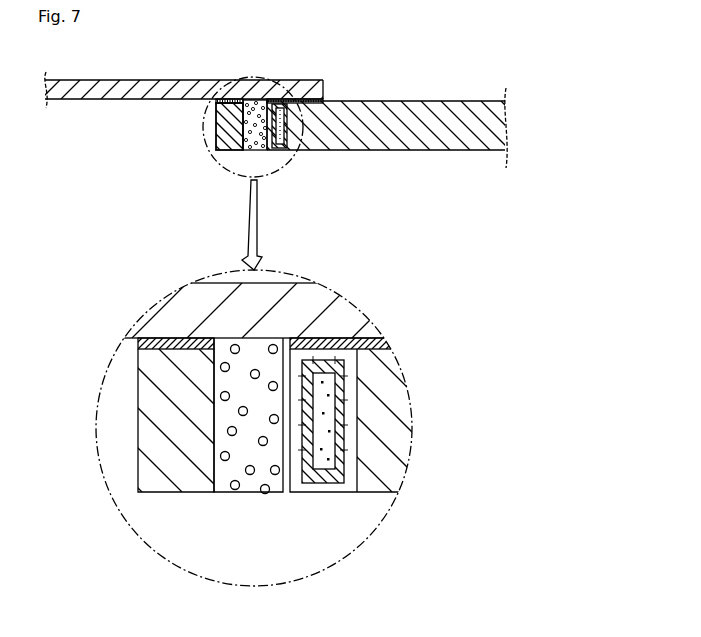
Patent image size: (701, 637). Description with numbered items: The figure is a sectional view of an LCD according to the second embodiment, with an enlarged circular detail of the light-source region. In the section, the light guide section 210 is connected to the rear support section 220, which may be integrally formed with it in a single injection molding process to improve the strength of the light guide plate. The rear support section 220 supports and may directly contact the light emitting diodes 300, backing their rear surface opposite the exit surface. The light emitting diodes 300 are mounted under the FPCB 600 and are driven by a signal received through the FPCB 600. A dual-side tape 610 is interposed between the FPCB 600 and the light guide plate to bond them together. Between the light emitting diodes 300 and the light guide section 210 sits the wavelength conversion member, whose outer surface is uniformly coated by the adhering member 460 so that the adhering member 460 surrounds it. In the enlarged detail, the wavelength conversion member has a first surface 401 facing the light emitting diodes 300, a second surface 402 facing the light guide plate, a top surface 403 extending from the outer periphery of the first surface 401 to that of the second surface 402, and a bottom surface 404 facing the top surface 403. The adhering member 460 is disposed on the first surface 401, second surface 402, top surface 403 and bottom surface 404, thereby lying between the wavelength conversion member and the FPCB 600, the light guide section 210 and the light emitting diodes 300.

The light guide section 210 is at (436, 152).
The rear support section 220 is at (216, 135).
The light emitting diodes 300 is at (243, 152).
The adhering member 460 is at (286, 150).
The FPCB 600 is at (252, 78).
The dual-side tape 610 is at (226, 98).
The first surface 401 is at (262, 433).
The second surface 402 is at (345, 403).
The top surface 403 is at (345, 340).
The bottom surface 404 is at (322, 484).